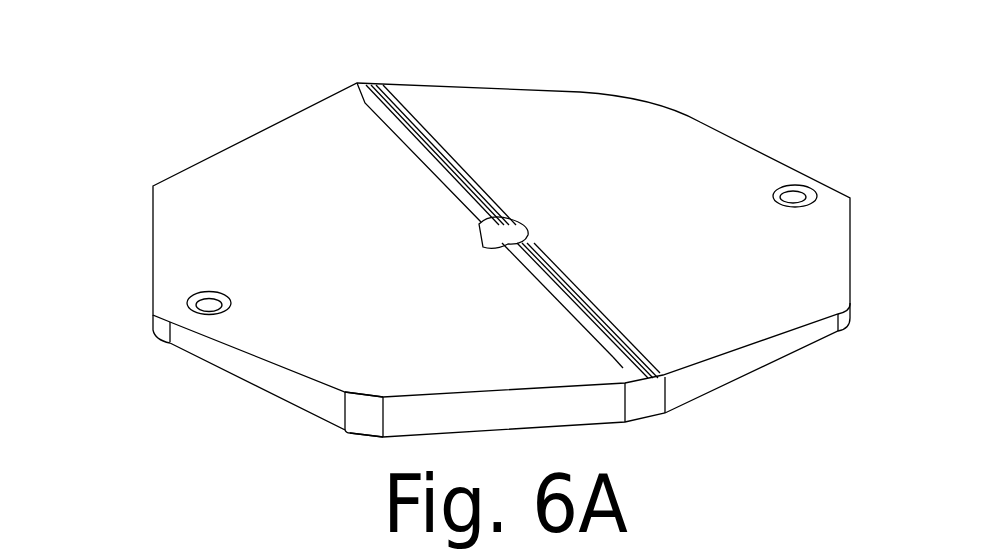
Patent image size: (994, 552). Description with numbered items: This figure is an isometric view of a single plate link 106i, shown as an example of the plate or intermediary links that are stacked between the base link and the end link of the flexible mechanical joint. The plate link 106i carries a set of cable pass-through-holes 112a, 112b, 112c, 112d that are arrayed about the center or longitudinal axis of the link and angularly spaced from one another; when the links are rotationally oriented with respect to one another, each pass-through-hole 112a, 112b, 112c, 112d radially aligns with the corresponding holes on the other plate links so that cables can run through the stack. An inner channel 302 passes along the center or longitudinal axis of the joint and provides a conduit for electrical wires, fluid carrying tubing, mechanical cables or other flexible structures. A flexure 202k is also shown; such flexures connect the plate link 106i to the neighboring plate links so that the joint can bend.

The plate link 106i is at (288, 158).
The cable pass-through-hole 112a is at (207, 308).
The cable pass-through-hole 112b is at (380, 109).
The cable pass-through-hole 112c is at (793, 197).
The cable pass-through-hole 112d is at (613, 357).
The flexure 202k is at (523, 254).
The inner channel 302 is at (498, 232).